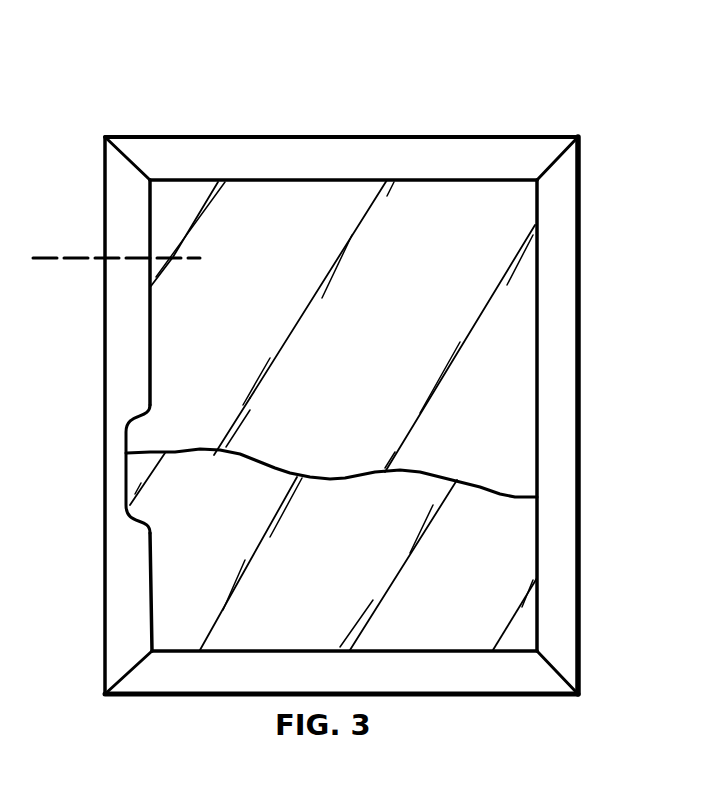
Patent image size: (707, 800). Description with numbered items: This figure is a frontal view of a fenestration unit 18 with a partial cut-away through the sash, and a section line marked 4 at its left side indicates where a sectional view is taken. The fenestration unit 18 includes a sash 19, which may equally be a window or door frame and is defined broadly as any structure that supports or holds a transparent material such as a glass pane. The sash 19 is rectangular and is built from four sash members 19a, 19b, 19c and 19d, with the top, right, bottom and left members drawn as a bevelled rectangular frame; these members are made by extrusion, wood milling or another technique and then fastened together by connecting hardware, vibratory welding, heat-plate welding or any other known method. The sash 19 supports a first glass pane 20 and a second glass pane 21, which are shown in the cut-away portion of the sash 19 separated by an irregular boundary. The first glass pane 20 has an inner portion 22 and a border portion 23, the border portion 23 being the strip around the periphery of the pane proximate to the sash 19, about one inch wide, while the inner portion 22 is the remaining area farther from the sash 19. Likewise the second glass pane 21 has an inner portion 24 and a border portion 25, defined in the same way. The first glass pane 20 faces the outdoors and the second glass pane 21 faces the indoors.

The fenestration unit 18 is at (604, 81).
The sash 19 is at (557, 280).
The sash member 19a is at (568, 392).
The sash member 19b is at (455, 687).
The sash member 19c is at (122, 606).
The sash member 19d is at (363, 147).
The first glass pane 20 is at (462, 594).
The second glass pane 21 is at (416, 336).
The inner portion 22 is at (325, 497).
The border portion 23 is at (146, 512).
The inner portion 24 is at (248, 437).
The border portion 25 is at (143, 434).
The section line 4- 4 is at (55, 272).